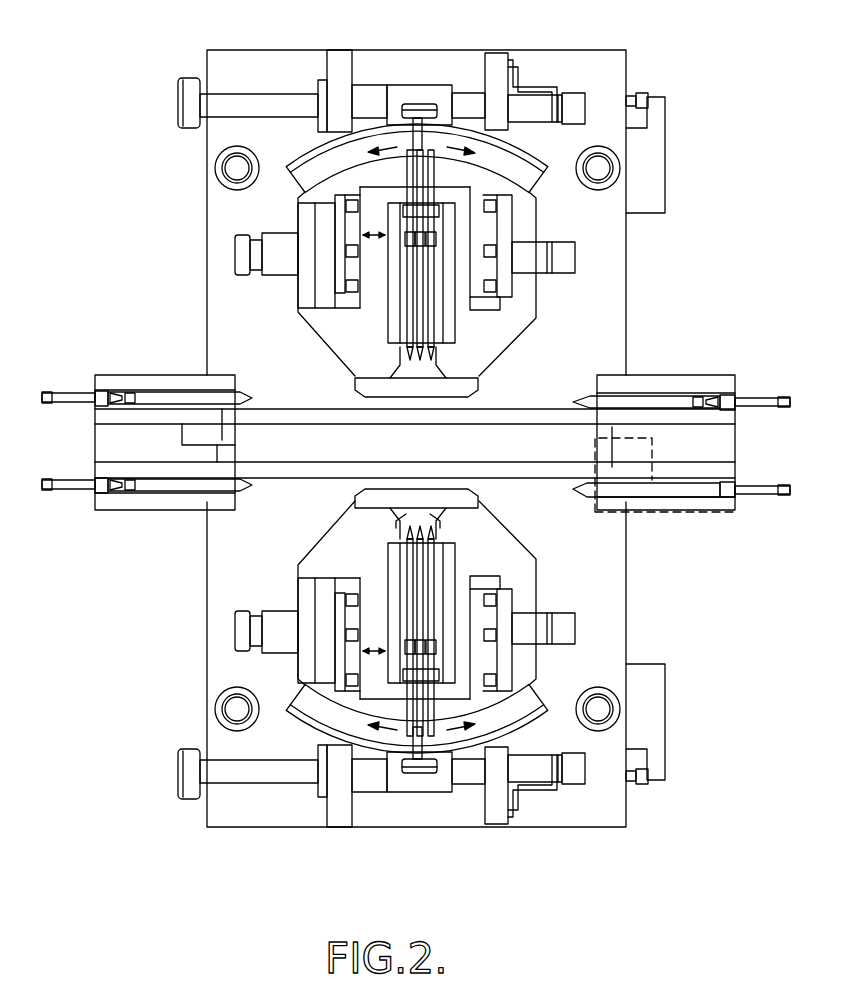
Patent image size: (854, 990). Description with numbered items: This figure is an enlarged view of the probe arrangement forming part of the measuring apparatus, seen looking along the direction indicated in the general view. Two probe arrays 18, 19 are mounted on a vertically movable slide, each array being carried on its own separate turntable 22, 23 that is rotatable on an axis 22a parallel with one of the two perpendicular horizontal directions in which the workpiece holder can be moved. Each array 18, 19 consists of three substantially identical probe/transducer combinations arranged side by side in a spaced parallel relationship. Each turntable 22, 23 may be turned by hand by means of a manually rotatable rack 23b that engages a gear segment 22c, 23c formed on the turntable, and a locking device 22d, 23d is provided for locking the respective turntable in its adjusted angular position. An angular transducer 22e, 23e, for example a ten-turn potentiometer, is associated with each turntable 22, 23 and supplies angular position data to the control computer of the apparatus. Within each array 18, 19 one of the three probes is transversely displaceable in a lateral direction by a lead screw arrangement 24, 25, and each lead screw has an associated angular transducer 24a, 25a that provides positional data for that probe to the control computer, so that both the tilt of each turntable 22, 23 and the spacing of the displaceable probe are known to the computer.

The probe array 18 is at (363, 335).
The probe array 19 is at (333, 555).
The turntable 22 is at (439, 204).
The axis 22a is at (410, 360).
The gear segment 22c is at (307, 170).
The locking device 22d is at (422, 143).
The angular transducer 22e is at (567, 123).
The turntable 23 is at (421, 682).
The manually rotatable rack 23b is at (393, 783).
The gear segment 23c is at (513, 722).
The locking device 23d is at (410, 757).
The angular transducer 23e is at (572, 780).
The lead screw arrangement 24 is at (242, 275).
The angular transducer 24a is at (563, 265).
The lead screw arrangement 25 is at (243, 648).
The angular transducer 25a is at (553, 632).